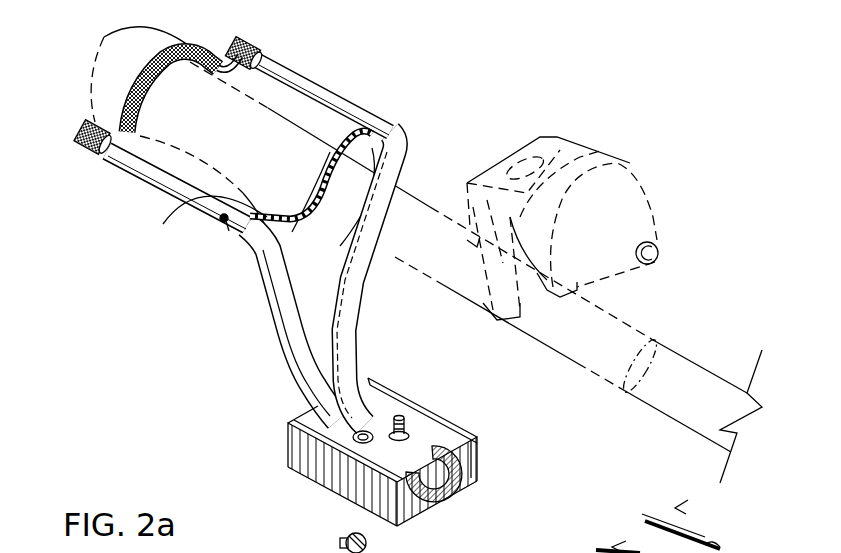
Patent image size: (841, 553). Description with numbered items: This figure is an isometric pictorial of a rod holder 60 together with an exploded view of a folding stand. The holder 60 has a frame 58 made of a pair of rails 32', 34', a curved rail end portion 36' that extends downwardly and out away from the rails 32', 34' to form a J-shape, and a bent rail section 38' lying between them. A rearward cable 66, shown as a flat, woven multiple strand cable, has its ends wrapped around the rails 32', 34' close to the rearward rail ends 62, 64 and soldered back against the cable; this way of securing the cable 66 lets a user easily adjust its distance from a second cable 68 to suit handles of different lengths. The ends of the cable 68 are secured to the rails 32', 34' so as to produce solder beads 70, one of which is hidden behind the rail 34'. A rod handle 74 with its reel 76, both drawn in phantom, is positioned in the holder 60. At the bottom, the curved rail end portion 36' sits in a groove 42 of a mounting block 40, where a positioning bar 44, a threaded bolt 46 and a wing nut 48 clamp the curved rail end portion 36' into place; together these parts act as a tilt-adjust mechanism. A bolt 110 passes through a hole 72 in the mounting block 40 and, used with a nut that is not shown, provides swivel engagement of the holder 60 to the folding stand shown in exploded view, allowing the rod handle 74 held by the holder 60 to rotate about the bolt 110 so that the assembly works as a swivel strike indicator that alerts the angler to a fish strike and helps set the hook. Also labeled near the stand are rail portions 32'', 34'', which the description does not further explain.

The rod handle 74 is at (116, 34).
The rearward rail end 64 is at (228, 40).
The rearward cable 66 is at (134, 100).
The rearward rail end 62 is at (70, 128).
The rail 34' is at (335, 242).
The holder 60 is at (449, 116).
The reel 76 is at (660, 186).
The rail 32' is at (207, 285).
The cable 68 is at (188, 203).
The solder bead 70 is at (226, 228).
The bent rail section 38' is at (311, 204).
The frame 58 is at (186, 307).
The curved rail end portion 36' is at (204, 404).
The hole 72 is at (364, 378).
The threaded bolt 46 is at (394, 414).
The wing nut 48 is at (418, 423).
The positioning bar 44 is at (444, 430).
The mounting block 40 is at (298, 466).
The groove 42 is at (414, 511).
The bolt 110 is at (338, 545).
The tube 32'' is at (603, 526).
The tube 34'' is at (708, 523).